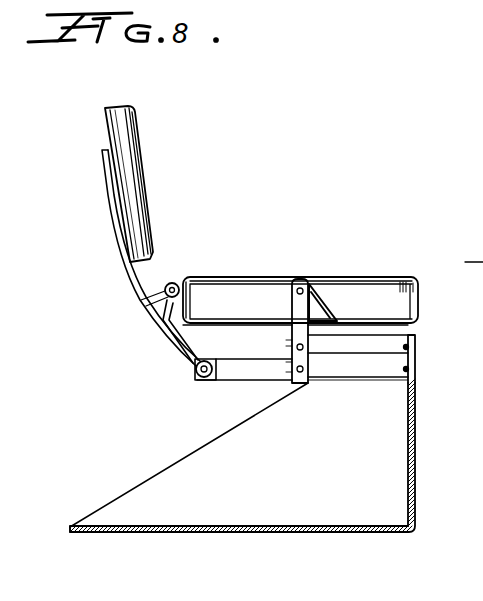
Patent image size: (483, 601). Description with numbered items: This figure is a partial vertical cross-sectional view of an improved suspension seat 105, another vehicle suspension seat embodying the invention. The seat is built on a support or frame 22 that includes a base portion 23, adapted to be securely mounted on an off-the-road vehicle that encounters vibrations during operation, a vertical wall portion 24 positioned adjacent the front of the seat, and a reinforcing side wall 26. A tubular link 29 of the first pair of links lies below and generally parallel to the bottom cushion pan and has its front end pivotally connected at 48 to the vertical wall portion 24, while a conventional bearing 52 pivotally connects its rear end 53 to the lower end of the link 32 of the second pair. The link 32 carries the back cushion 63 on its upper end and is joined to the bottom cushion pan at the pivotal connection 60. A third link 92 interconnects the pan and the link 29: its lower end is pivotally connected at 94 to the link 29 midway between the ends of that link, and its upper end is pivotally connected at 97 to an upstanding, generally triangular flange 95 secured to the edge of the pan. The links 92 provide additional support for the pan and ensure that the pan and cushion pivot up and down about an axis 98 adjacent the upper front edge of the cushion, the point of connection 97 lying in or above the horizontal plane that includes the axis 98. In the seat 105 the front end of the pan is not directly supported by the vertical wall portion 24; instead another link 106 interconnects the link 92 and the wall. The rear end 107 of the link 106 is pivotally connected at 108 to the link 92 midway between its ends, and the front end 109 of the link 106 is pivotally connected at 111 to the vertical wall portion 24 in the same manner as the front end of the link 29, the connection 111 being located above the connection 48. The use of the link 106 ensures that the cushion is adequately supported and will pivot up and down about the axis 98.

The support or frame 22 is at (290, 535).
The base portion 23 is at (163, 534).
The vertical wall portion 24 is at (413, 468).
The side wall 26 is at (170, 473).
The link 29 is at (226, 350).
The link 32 is at (107, 197).
The pivotal connection 48 is at (403, 370).
The bearing 52 is at (195, 370).
The rear end of link 53 is at (215, 379).
The pivotal connection 60 is at (176, 283).
The back cushion 63 is at (137, 128).
The link 92 is at (297, 312).
The pivotal connection 94 is at (290, 369).
The flange 95 is at (310, 297).
The point of connection 97 is at (298, 284).
The axis 98 is at (398, 287).
The suspension seat 105 is at (290, 246).
The link 106 is at (347, 345).
The rear end of link 107 is at (317, 343).
The pivotal connection 108 is at (296, 347).
The front end of link 109 is at (398, 313).
The pivotal connection 111 is at (388, 337).